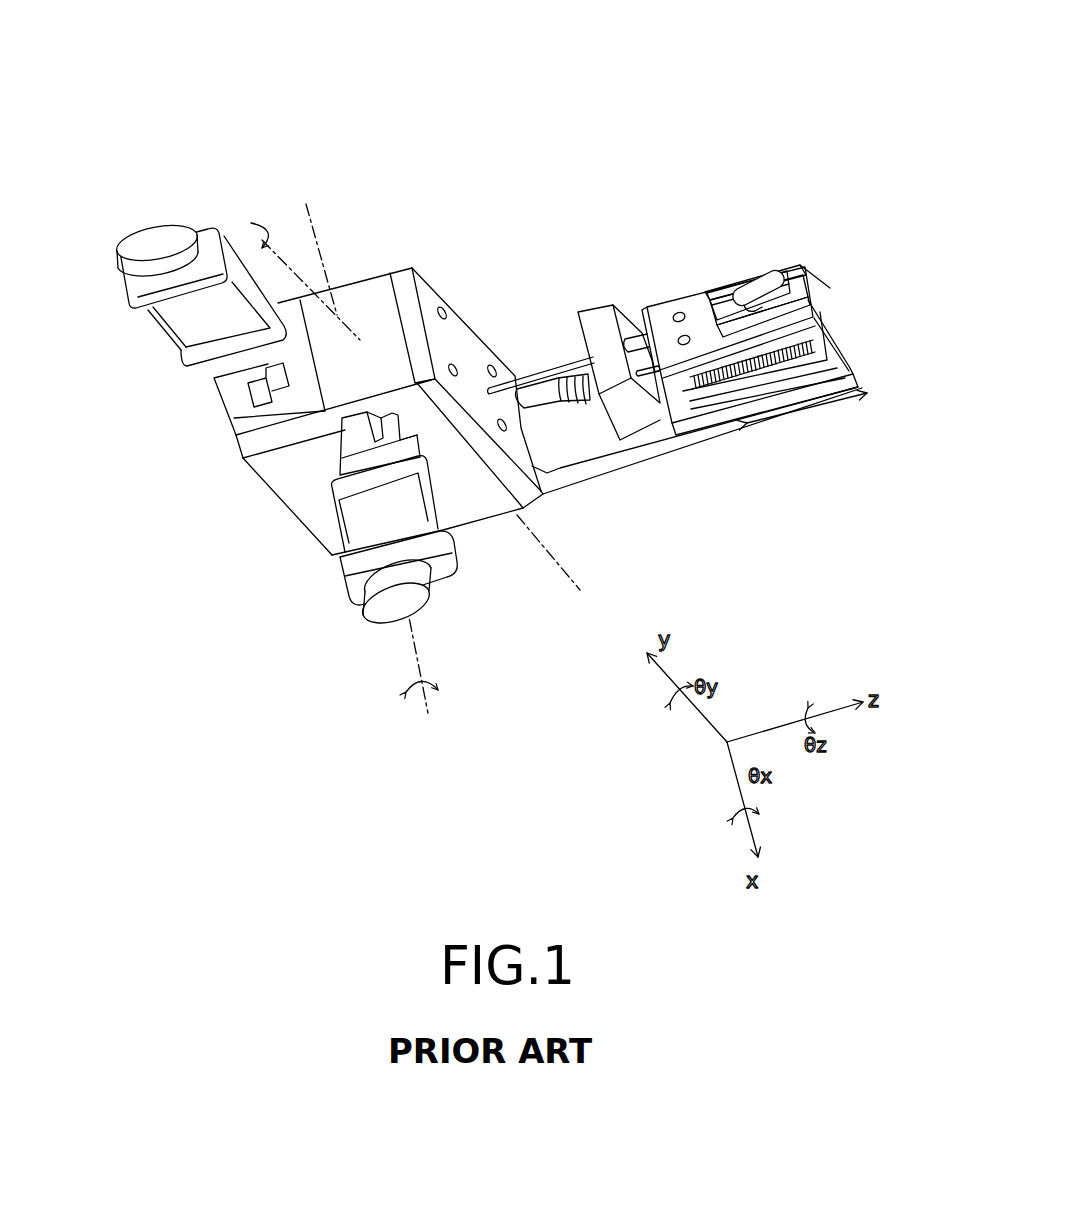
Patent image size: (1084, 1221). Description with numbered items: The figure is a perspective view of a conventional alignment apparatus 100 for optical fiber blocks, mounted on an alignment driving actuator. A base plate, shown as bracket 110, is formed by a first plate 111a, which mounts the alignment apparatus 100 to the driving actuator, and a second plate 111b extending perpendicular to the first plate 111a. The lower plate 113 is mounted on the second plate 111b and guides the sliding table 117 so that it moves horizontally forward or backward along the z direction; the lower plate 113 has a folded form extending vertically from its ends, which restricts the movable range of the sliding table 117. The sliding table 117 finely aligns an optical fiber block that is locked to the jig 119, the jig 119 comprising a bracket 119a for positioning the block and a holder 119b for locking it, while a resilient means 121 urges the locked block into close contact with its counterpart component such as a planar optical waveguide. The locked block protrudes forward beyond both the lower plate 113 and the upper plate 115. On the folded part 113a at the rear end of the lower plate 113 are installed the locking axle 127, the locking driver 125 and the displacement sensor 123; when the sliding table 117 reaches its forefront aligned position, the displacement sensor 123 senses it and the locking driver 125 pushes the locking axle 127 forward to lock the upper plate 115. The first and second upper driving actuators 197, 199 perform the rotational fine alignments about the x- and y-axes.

The alignment apparatus 100 is at (483, 107).
The L-shaped bracket 110 is at (588, 458).
The first plate 111a is at (401, 284).
The second plate 111b is at (608, 452).
The lower plate 113 is at (832, 332).
The folded part 113a is at (596, 320).
The upper plate 115 is at (670, 301).
The sliding table 117 is at (746, 364).
The jig 119 is at (780, 250).
The bracket 119a is at (794, 272).
The holder 119b is at (752, 284).
The resilient means 121 is at (779, 375).
The displacement sensor 123 is at (519, 382).
The locking driver 125 is at (548, 405).
The locking axle 127 is at (644, 372).
The first upper driving actuator 197 is at (178, 322).
The second upper driving actuator 199 is at (413, 598).